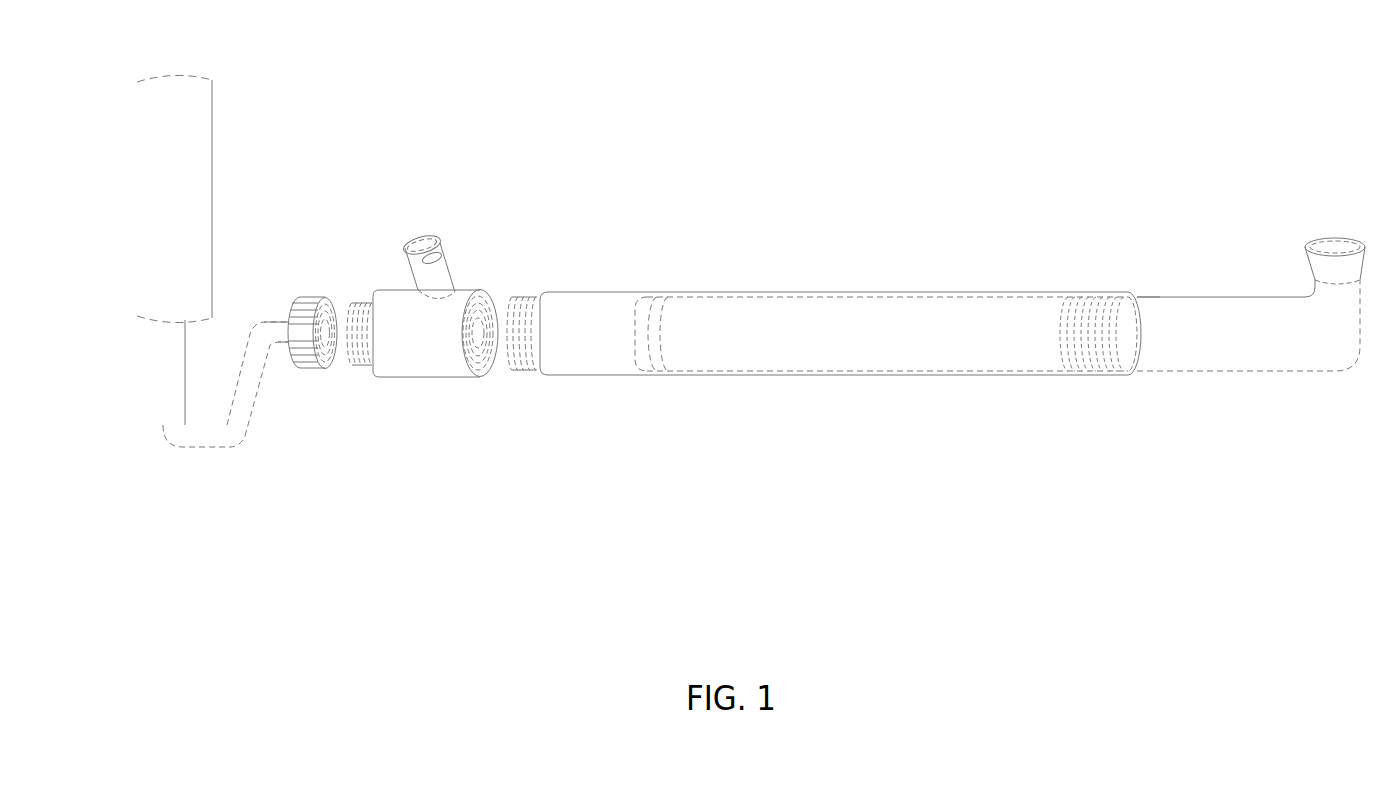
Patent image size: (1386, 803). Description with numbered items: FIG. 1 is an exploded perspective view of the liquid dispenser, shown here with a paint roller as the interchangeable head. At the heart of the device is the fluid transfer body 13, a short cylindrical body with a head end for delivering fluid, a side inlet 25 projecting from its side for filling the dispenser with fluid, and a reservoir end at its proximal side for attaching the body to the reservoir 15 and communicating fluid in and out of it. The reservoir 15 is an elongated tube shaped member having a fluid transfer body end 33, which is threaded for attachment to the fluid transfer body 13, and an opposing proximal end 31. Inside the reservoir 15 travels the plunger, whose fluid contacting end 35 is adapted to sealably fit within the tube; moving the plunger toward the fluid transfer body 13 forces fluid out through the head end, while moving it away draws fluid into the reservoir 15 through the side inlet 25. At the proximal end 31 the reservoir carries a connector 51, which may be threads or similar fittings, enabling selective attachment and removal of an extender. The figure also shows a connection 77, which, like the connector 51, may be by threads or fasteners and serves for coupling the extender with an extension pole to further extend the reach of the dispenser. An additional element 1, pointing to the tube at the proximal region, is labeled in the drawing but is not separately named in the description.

The tube 1 is at (1208, 310).
The fluid transfer body 13 is at (438, 380).
The reservoir 15 is at (704, 288).
The side inlet 25 is at (440, 238).
The proximal end 31 is at (1133, 378).
The fluid transfer body end 33 is at (527, 373).
The fluid contacting end 35 is at (637, 376).
The inner tube end 51 is at (1137, 295).
The connection 77 is at (1100, 297).